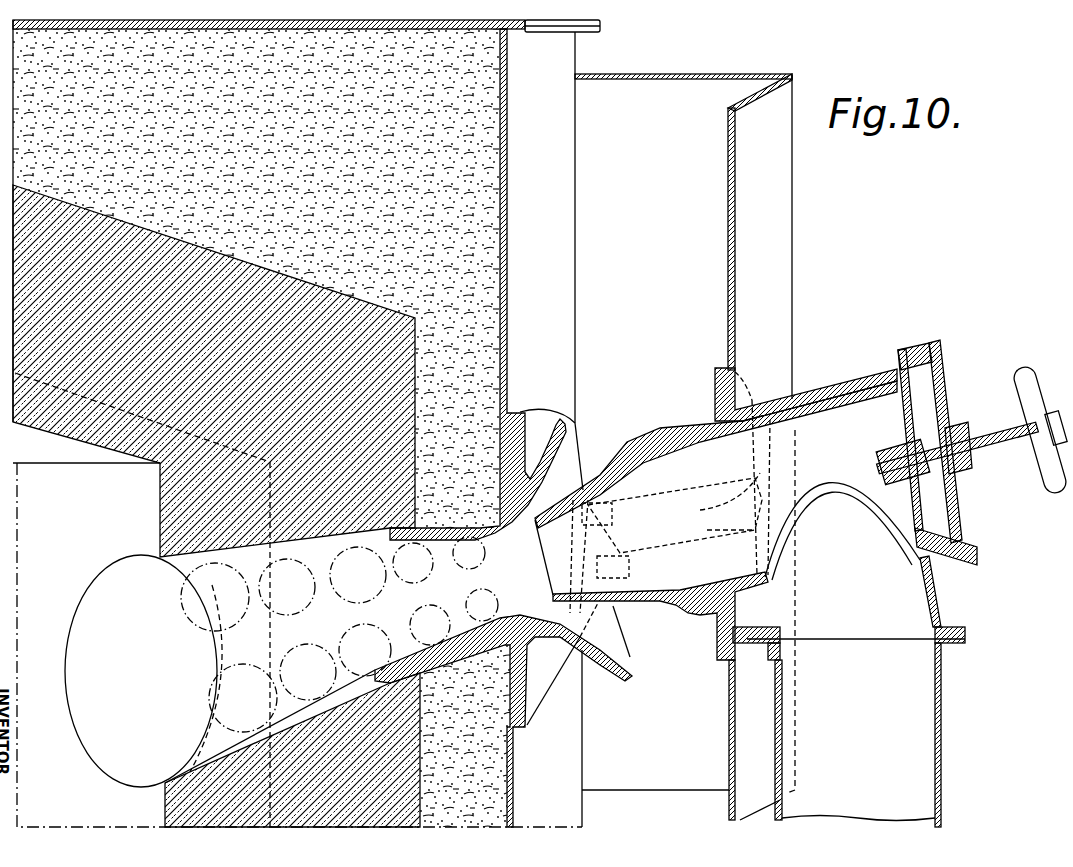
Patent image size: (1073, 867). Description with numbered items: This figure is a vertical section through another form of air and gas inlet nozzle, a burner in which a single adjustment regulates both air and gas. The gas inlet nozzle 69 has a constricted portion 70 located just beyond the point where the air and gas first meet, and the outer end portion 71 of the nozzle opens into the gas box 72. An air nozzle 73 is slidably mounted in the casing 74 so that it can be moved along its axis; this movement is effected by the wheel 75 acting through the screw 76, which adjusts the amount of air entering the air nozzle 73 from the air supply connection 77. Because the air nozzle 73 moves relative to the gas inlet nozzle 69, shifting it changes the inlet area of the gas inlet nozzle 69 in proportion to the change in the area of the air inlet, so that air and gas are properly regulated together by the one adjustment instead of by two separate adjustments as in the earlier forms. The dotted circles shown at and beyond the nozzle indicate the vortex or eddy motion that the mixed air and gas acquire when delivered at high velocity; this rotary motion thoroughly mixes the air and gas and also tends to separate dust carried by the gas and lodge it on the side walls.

The gas inlet nozzle 69 is at (547, 497).
The constricted portion 70 is at (513, 620).
The outer end portion 71 is at (612, 628).
The gas box 72 is at (685, 429).
The air nozzle 73 is at (716, 520).
The casing 74 is at (847, 400).
The wheel 75 is at (1030, 370).
The screw 76 is at (993, 440).
The air supply connection 77 is at (849, 655).